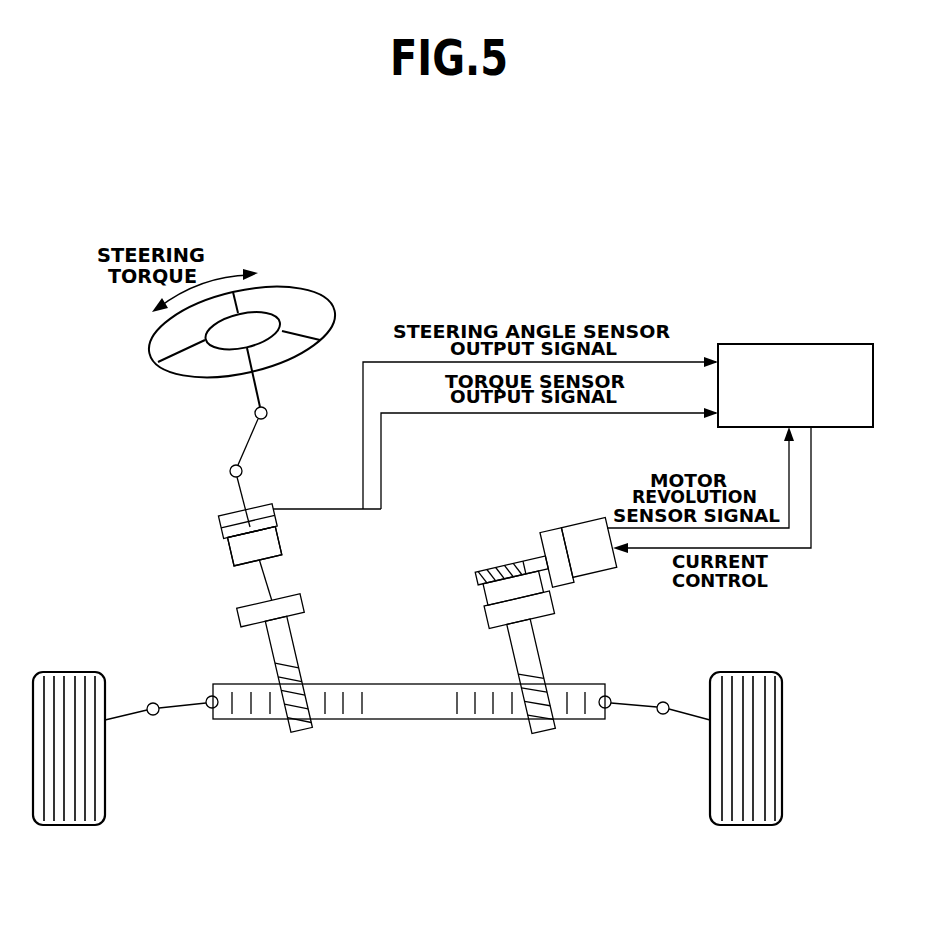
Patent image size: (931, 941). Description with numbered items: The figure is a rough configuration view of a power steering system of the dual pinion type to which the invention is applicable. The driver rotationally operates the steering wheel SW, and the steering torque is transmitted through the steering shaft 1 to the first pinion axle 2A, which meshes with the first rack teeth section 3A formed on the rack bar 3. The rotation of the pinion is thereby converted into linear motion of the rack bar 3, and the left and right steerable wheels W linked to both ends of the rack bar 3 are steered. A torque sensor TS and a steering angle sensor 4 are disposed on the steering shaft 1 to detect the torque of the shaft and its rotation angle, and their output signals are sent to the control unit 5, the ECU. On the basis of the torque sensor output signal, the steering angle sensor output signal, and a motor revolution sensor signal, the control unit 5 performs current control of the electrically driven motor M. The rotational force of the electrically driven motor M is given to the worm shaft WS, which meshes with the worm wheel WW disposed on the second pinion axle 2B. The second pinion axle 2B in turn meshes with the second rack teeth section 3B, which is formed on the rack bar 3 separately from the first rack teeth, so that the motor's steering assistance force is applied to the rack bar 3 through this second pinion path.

The steering wheel SW is at (314, 292).
The steering shaft 1 is at (240, 493).
The steering angle sensor 4 is at (219, 523).
The torque sensor TS is at (220, 565).
The first pinion axle 2A is at (268, 659).
The rack bar 3 is at (409, 710).
The first rack teeth section 3A is at (333, 693).
The second rack teeth section 3B is at (484, 707).
The second pinion axle 2B is at (542, 657).
The worm wheel WW is at (493, 595).
The worm shaft WS is at (498, 566).
The electrically driven motor M is at (587, 545).
The control unit (ECU) 5 is at (785, 352).
The steerable wheels W is at (70, 674).